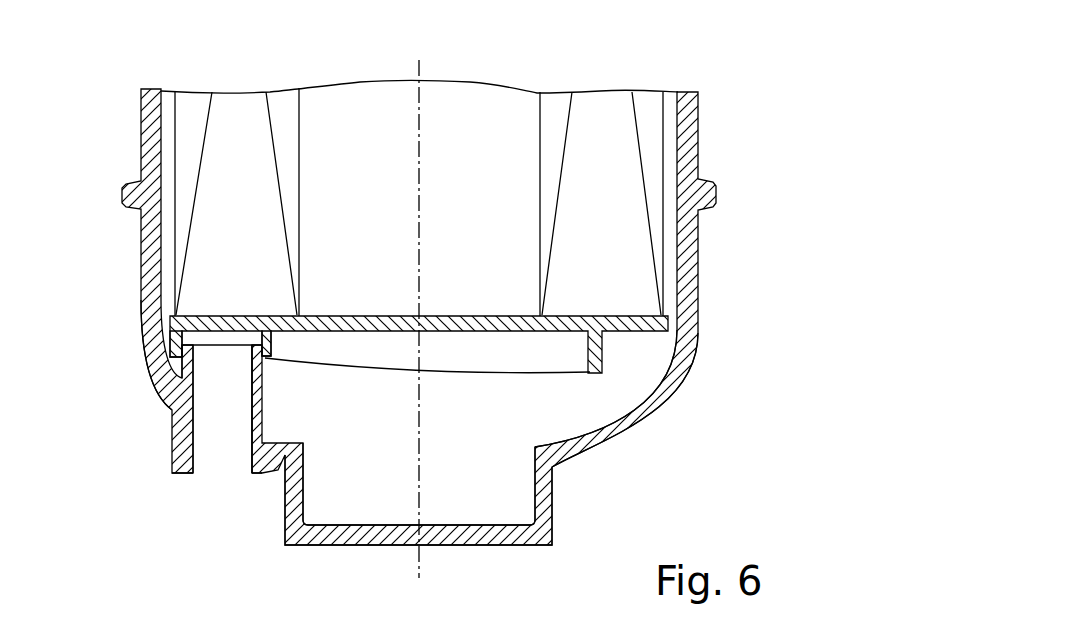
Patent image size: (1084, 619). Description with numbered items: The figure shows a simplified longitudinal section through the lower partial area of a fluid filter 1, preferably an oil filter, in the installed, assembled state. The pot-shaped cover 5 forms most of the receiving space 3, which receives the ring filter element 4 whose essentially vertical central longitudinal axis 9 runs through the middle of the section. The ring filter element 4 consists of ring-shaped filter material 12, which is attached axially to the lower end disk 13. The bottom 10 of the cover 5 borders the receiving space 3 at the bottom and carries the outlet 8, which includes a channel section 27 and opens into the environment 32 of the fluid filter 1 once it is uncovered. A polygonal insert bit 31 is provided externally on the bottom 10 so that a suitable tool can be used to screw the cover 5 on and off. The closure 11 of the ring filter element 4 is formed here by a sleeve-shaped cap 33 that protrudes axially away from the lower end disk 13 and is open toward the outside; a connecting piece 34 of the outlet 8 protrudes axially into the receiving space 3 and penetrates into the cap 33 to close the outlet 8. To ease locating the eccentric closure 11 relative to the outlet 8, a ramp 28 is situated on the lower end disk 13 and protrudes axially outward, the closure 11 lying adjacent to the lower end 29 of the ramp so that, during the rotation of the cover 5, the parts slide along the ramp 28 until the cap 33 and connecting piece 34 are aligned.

The fluid filter 1 is at (758, 117).
The receiving space 3 is at (546, 421).
The ring filter element 4 is at (605, 104).
The cover 5 is at (700, 282).
The outlet 8 is at (207, 454).
The central longitudinal axis 9 is at (419, 198).
The bottom 10 is at (594, 444).
The closure 11 is at (274, 347).
The filter material 12 is at (239, 118).
The lower end disk 13 is at (350, 317).
The channel section 27 is at (248, 447).
The ramp 28 is at (447, 374).
The lower end of the ramp 29 is at (265, 360).
The polygonal insert bit 31 is at (553, 511).
The environment 32 is at (233, 586).
The cap 33 is at (175, 342).
The connecting piece 34 is at (180, 362).